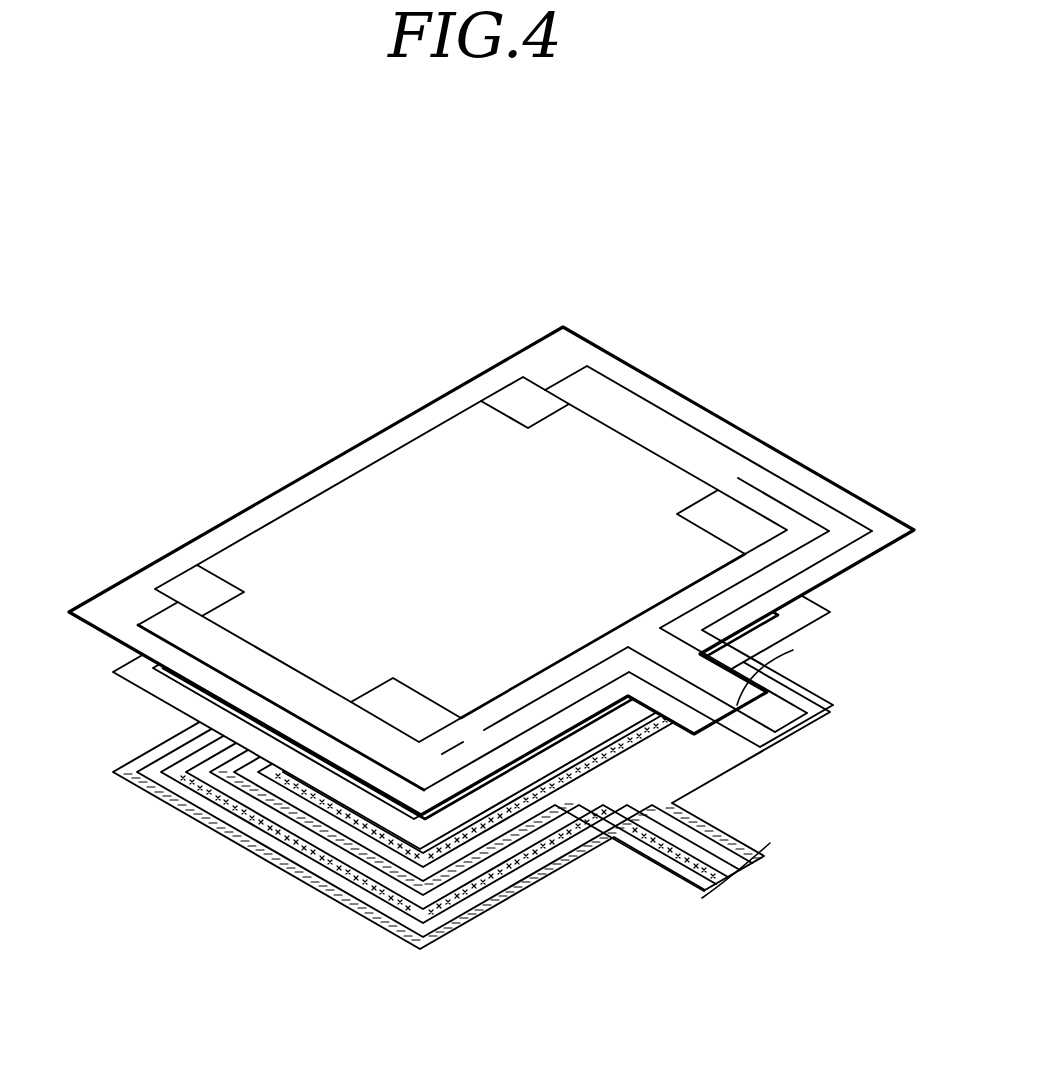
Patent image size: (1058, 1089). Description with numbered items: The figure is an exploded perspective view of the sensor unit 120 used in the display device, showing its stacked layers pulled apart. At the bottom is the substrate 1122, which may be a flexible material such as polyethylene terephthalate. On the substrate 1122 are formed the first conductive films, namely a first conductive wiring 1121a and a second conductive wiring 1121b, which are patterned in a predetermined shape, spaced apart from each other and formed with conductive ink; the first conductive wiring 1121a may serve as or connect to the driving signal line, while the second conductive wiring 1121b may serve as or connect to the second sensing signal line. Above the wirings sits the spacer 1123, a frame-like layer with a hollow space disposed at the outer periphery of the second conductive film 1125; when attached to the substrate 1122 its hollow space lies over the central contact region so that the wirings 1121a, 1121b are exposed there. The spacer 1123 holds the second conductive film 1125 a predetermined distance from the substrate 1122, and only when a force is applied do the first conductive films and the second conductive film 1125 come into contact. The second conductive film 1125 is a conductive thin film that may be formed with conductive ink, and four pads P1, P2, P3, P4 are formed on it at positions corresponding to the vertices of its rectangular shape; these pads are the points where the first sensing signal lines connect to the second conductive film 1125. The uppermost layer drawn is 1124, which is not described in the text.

The sensor unit 120 is at (717, 307).
The upper substrate 1124 is at (372, 447).
The second conductive film 1125 is at (337, 545).
The spacer 1123 is at (135, 675).
The substrate 1122 is at (460, 930).
The first conductive wiring 1121a is at (240, 835).
The second conductive wiring 1121b is at (195, 792).
The pad P1 is at (184, 589).
The pad P2 is at (385, 704).
The pad P3 is at (538, 392).
The pad P4 is at (725, 504).